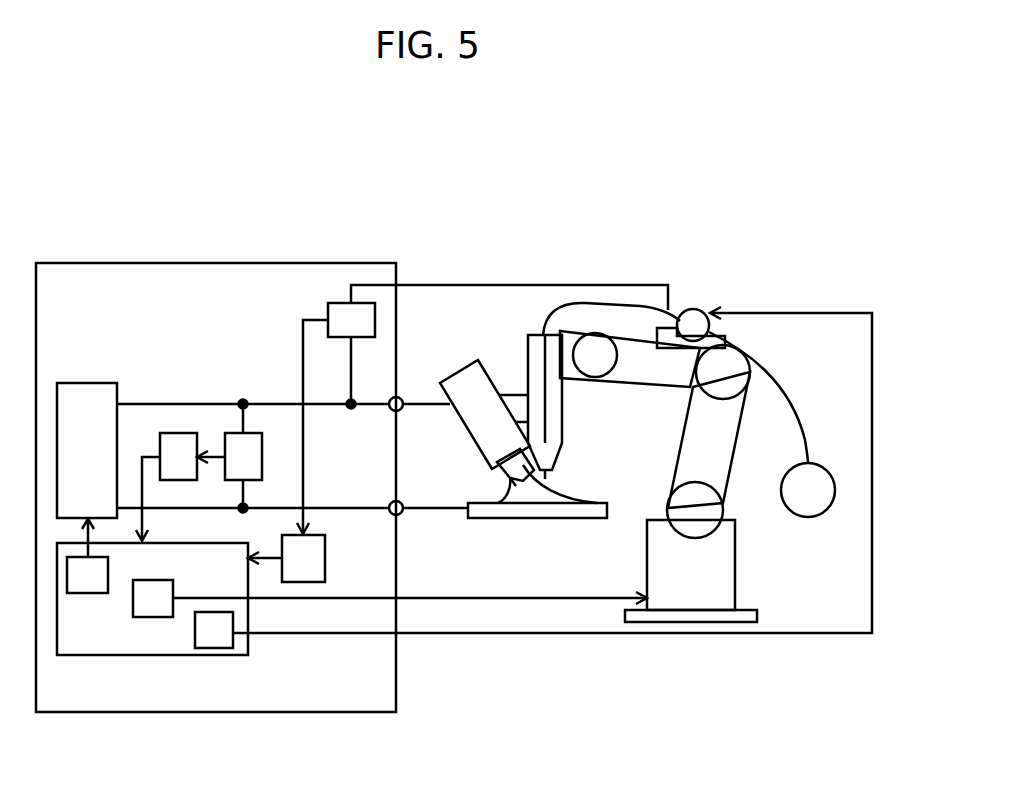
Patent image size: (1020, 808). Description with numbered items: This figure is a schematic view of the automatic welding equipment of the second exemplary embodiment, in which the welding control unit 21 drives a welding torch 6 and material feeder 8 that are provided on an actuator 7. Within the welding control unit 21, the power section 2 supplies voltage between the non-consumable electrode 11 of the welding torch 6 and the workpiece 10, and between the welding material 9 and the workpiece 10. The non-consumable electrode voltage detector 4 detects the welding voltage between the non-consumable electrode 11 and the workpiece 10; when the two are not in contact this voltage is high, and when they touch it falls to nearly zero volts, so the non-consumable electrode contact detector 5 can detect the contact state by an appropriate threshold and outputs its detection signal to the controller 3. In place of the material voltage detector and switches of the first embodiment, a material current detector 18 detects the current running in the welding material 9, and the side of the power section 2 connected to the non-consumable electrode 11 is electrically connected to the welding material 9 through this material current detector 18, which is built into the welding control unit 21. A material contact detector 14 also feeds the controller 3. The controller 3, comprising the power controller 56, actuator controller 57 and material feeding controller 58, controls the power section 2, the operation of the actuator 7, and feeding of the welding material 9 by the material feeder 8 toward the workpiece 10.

The welding control unit 21 is at (74, 262).
The power section 2 is at (93, 383).
The non-consumable electrode contact detector 5 is at (170, 432).
The non-consumable electrode voltage detector 4 is at (232, 432).
The material current detector 18 is at (328, 312).
The material contact detector 14 is at (325, 556).
The controller 3 is at (147, 656).
The power controller 56 is at (92, 594).
The actuator controller 57 is at (155, 618).
The material feeding controller 58 is at (207, 649).
The welding torch 6 is at (483, 381).
The non-consumable electrode 11 is at (510, 473).
The welding material 9 is at (553, 476).
The workpiece 10 is at (540, 519).
The material feeder 8 is at (694, 320).
The actuator 7 is at (745, 542).